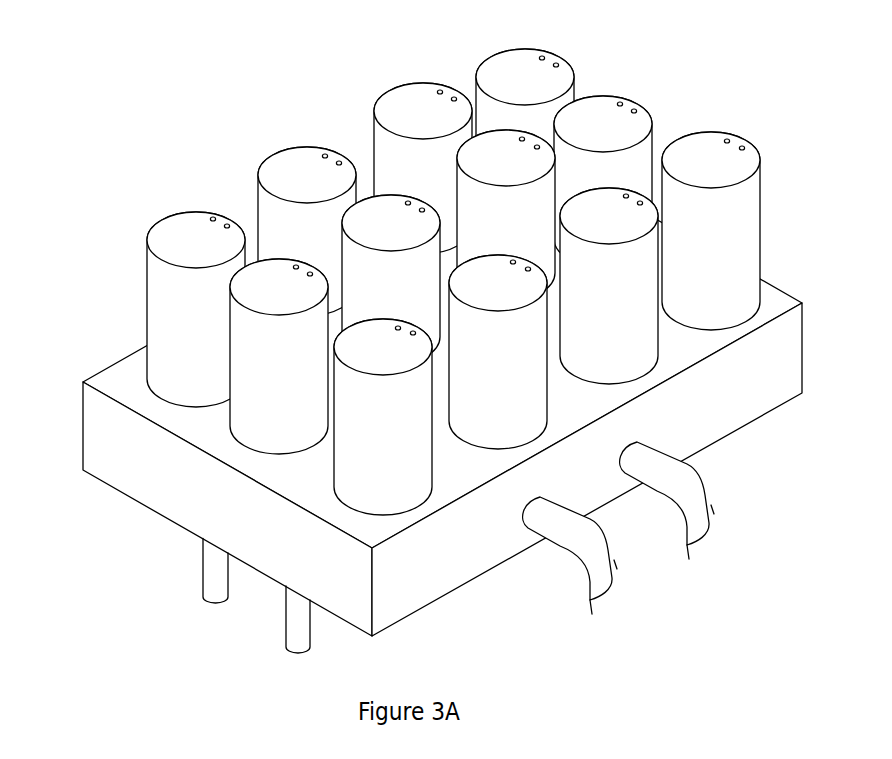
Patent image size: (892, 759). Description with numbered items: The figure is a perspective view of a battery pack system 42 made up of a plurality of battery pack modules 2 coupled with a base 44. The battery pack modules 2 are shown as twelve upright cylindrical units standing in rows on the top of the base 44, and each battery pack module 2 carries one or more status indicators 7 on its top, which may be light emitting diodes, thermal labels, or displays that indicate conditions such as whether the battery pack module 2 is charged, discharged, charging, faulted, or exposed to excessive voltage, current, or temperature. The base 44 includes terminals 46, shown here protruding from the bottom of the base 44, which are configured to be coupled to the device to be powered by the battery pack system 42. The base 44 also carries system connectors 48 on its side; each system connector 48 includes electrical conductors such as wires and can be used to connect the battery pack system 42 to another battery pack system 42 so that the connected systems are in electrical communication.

The battery pack module 2 is at (374, 140).
The status indicator 7 is at (224, 227).
The battery pack system 42 is at (205, 160).
The base 44 is at (83, 427).
The terminal 46 is at (215, 607).
The system connector 48 is at (697, 510).